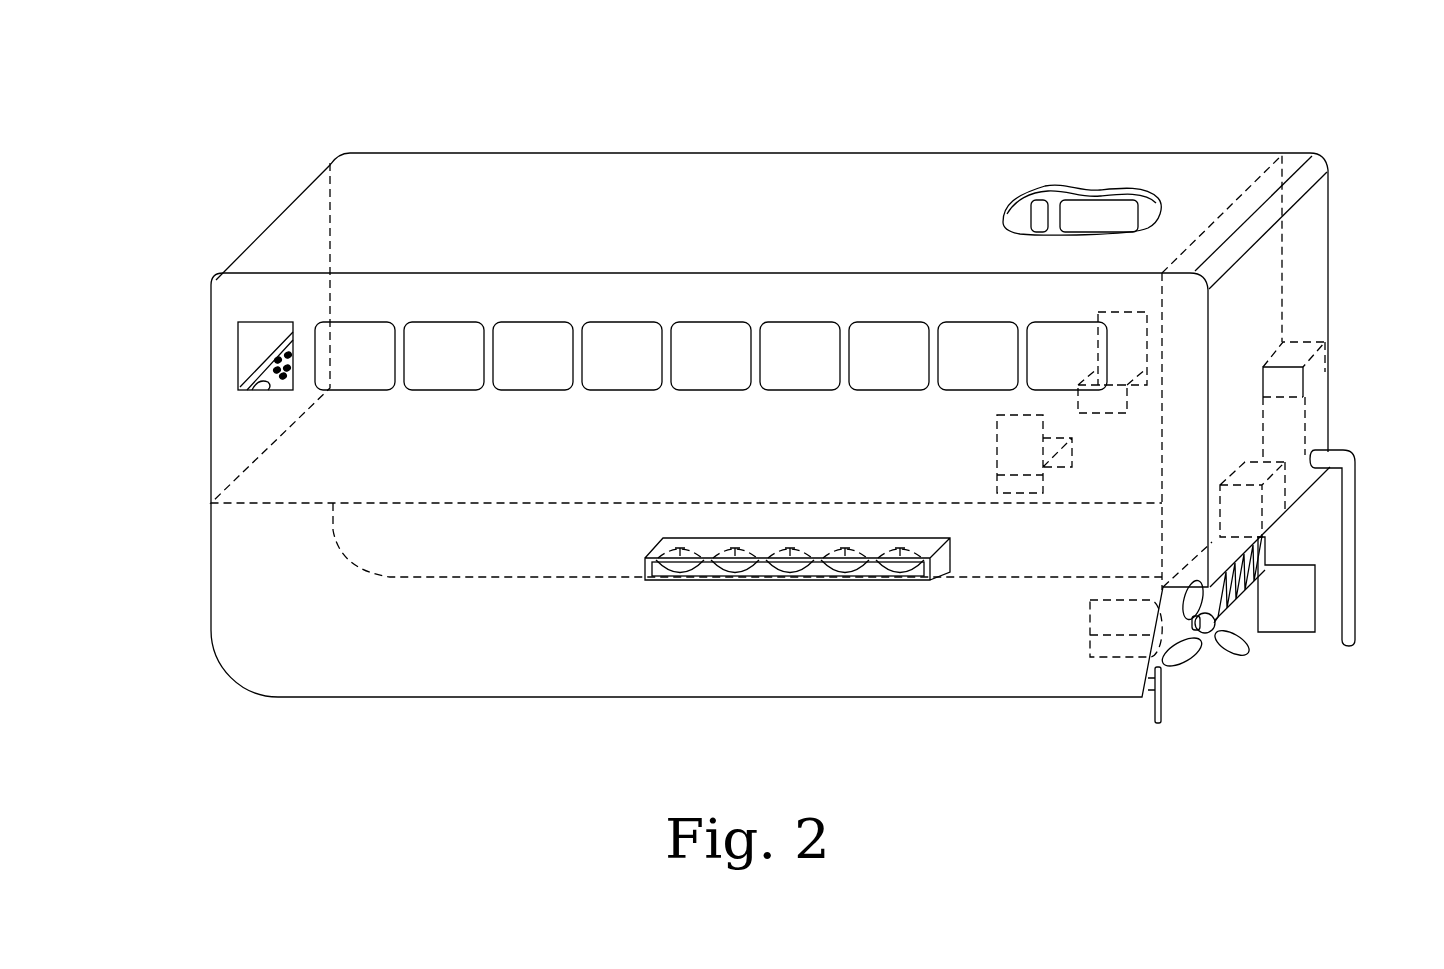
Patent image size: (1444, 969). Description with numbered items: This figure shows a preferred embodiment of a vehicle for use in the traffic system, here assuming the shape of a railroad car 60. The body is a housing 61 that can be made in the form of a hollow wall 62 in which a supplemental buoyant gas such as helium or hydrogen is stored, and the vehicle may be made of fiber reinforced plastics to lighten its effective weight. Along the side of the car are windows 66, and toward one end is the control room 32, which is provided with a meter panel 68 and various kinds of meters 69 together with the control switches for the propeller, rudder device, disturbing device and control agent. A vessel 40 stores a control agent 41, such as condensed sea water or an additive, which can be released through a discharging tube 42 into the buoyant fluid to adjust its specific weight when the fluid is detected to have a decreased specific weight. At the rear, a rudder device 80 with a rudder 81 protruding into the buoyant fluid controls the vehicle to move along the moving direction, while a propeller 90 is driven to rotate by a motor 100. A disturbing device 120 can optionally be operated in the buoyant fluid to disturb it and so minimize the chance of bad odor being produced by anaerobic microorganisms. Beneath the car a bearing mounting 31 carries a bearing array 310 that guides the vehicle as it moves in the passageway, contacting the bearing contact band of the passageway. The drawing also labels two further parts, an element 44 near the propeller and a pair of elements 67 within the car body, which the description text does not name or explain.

The railroad car 60 is at (838, 180).
The windows 66 is at (726, 345).
The control room 32 is at (275, 322).
The meter panel 68 is at (272, 352).
The meters 69 is at (246, 387).
The housing 61 is at (1044, 183).
The hollow wall 62 is at (1090, 190).
The vessel 40 is at (1318, 380).
The control agent 41 is at (1320, 383).
The discharging tube 42 is at (1345, 465).
The rudder device 80 is at (1253, 473).
The rudder 81 is at (1288, 592).
The disturbing device 120 is at (1250, 588).
The propeller 90 is at (1223, 637).
The pin 44 is at (1162, 700).
The motor 100 is at (1120, 635).
The modules 67 is at (1135, 342).
The bearing mounting 31 is at (648, 547).
The bearing array 310 is at (703, 553).